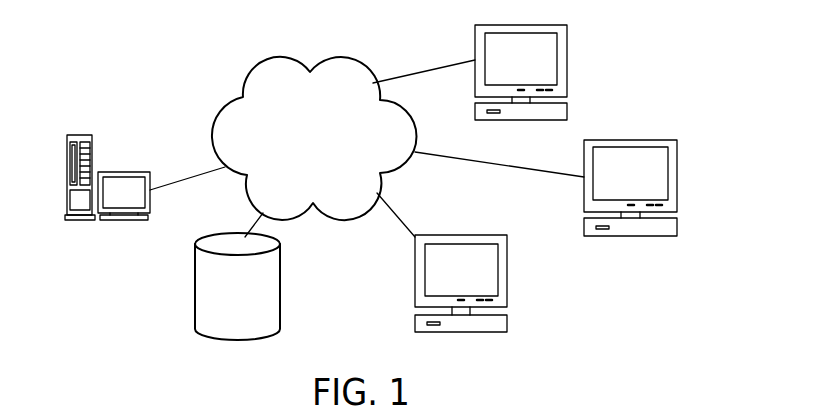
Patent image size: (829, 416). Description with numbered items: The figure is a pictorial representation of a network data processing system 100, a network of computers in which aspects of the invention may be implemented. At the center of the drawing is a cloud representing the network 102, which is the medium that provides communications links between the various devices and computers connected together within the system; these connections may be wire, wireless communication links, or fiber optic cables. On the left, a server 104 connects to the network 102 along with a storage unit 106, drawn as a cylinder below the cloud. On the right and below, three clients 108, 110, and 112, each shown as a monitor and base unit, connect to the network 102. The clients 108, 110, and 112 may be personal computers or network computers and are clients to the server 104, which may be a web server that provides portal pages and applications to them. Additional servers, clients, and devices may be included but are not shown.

The network data processing system 100 is at (172, 82).
The network 102 is at (333, 173).
The server 104 is at (125, 172).
The storage unit 106 is at (280, 282).
The client 108 is at (567, 55).
The client 110 is at (677, 175).
The client 112 is at (507, 275).